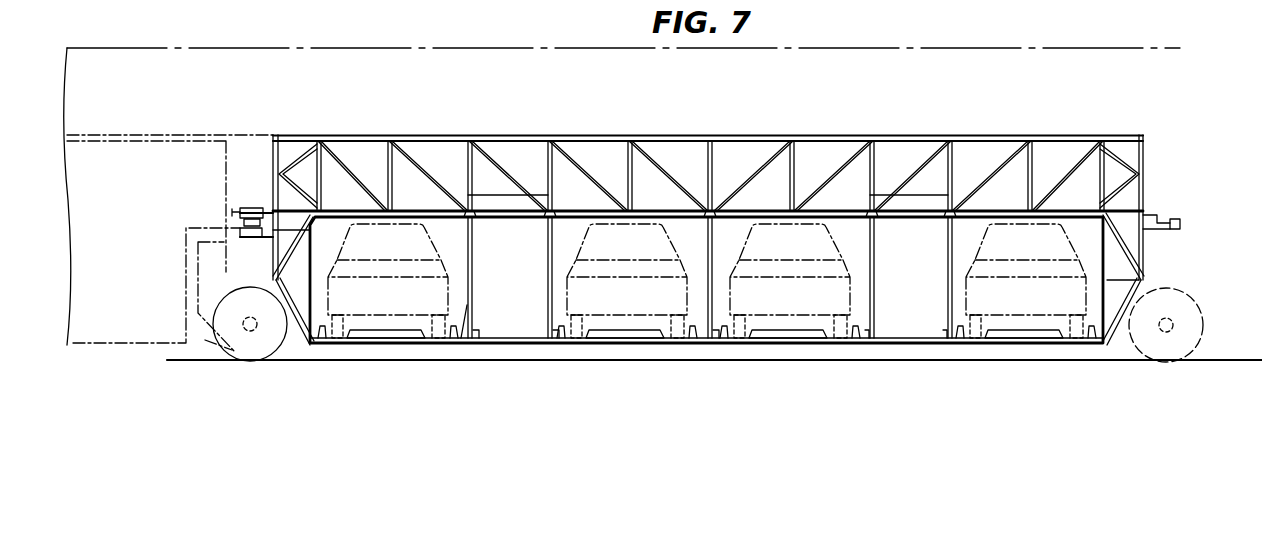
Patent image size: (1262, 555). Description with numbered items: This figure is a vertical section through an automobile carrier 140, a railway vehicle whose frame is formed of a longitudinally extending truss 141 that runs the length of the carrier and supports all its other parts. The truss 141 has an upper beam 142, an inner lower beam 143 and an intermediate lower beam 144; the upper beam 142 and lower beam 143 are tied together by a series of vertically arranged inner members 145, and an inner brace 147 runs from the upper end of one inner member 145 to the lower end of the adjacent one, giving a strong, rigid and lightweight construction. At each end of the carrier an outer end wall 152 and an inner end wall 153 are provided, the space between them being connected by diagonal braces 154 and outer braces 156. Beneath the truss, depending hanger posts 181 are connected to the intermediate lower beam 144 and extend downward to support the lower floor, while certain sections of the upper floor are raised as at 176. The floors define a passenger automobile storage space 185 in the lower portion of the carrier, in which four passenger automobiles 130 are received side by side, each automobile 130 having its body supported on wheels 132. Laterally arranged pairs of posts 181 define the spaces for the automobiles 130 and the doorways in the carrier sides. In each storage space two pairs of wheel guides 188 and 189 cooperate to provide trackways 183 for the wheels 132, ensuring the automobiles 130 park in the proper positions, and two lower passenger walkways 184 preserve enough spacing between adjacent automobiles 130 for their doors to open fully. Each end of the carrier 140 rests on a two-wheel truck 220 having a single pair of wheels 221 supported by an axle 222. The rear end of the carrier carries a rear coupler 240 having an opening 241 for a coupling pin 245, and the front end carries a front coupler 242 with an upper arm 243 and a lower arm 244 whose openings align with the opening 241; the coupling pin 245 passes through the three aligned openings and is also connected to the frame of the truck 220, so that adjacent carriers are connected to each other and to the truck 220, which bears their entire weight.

The automobile carrier 140 is at (426, 44).
The first longitudinally extending truss 141 is at (700, 126).
The upper beam 142 is at (430, 135).
The inner lower beam 143 is at (342, 210).
The intermediate lower beam 144 is at (418, 210).
The inner member 145 is at (466, 158).
The inner brace 147 is at (495, 160).
The outer end wall 152 is at (273, 178).
The inner end wall 153 is at (316, 248).
The diagonal brace 154 is at (300, 150).
The outer brace 156 is at (300, 320).
The raised section of upper floor 176 is at (506, 195).
The hanger post 181 is at (546, 281).
The trackway 183 is at (456, 330).
The lower passenger walkway 184 is at (395, 334).
The passenger automobile storage space 185 is at (546, 253).
The wheel guide 188 is at (468, 308).
The wheel guide 189 is at (797, 334).
The passenger automobile 130 is at (608, 224).
The wheels 132 is at (433, 330).
The two-wheel truck 220 is at (197, 290).
The wheels 221 is at (245, 326).
The axle 222 is at (205, 340).
The rear coupler 240 is at (240, 224).
The opening 241 is at (1183, 224).
The front coupler 242 is at (270, 194).
The upper arm 243 is at (244, 214).
The lower arm 244 is at (238, 232).
The coupling pin 245 is at (250, 207).